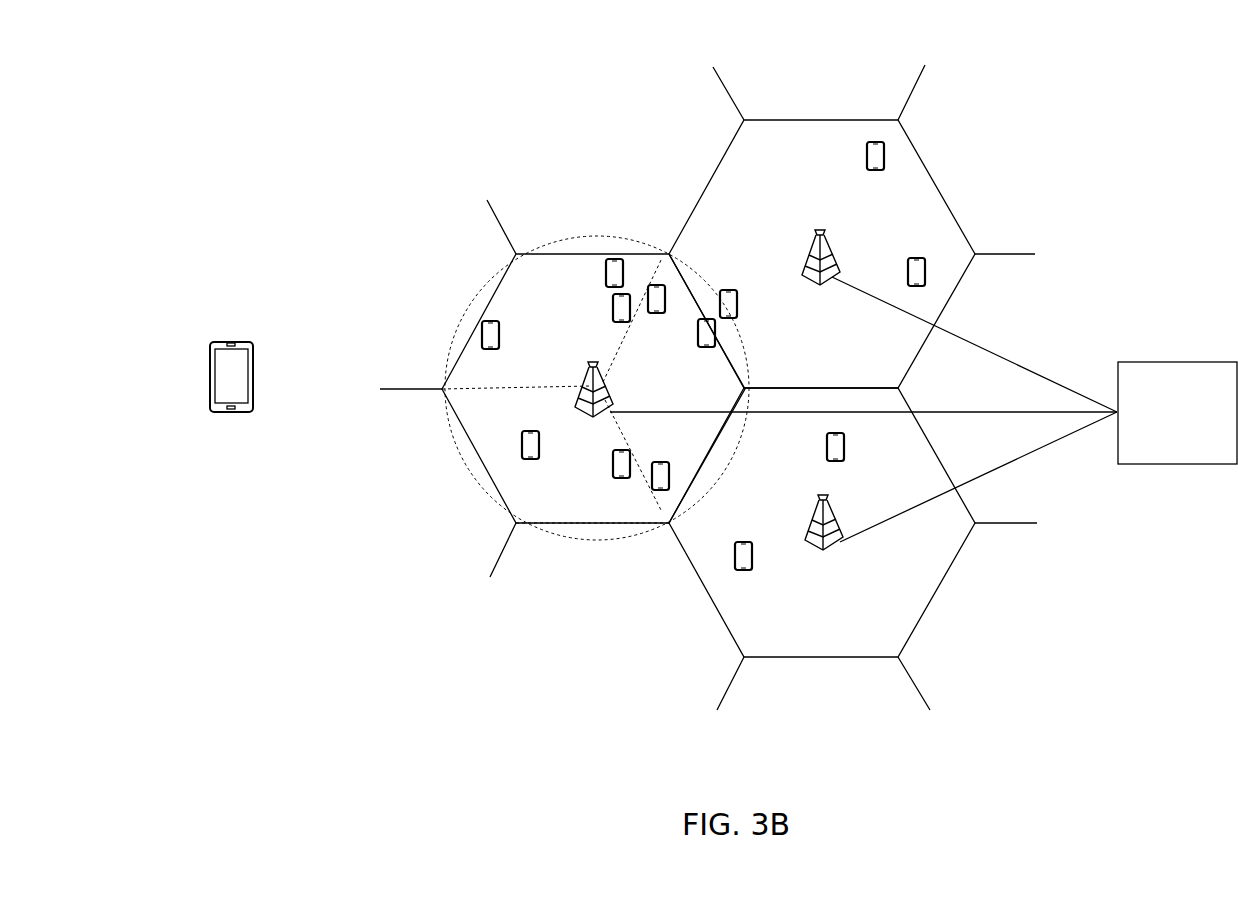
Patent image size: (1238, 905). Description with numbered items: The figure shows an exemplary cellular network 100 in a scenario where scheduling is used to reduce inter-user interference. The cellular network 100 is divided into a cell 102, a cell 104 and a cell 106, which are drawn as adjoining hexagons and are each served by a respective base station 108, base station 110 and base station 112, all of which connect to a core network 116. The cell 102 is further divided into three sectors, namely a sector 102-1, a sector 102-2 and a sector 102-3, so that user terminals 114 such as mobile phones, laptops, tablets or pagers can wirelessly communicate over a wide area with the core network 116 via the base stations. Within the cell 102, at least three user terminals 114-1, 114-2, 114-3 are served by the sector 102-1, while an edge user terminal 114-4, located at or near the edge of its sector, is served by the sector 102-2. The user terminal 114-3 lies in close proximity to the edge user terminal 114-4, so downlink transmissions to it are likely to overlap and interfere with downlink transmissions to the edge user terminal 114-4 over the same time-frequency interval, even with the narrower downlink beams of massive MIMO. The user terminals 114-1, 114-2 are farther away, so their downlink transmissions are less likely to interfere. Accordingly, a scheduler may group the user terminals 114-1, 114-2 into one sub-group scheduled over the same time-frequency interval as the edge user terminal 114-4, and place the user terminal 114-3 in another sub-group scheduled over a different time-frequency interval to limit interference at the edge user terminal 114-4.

The cellular network 100 is at (368, 653).
The cell 102 is at (472, 447).
The sector 102-1 is at (573, 237).
The sector 102-2 is at (742, 337).
The sector 102-3 is at (587, 540).
The cell 104 is at (942, 583).
The cell 106 is at (932, 178).
The base station 108 is at (605, 383).
The base station 110 is at (837, 508).
The base station 112 is at (837, 247).
The user terminal 114 is at (230, 343).
The user terminal 114-1 is at (613, 257).
The user terminal 114-2 is at (490, 321).
The user terminal 114-3 is at (613, 303).
The edge user terminal 114-4 is at (665, 287).
The core network 116 is at (1177, 413).